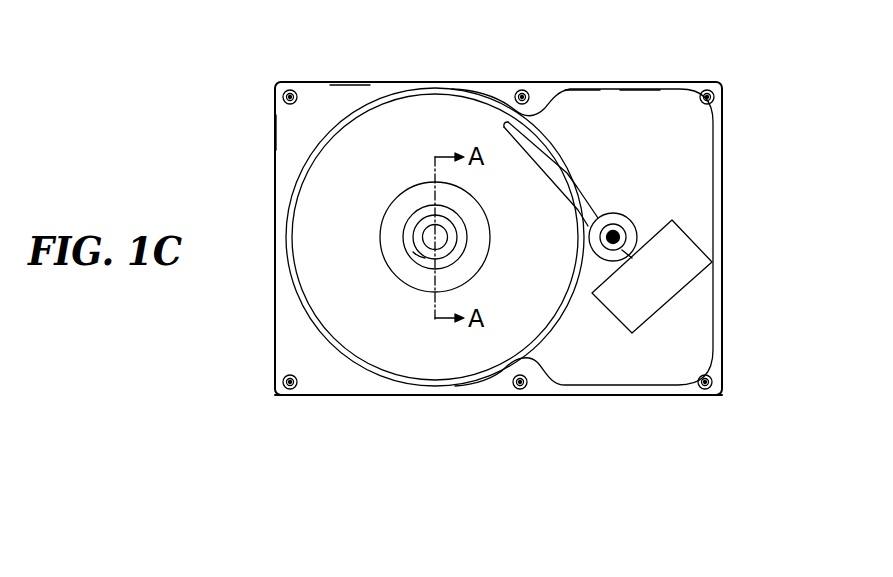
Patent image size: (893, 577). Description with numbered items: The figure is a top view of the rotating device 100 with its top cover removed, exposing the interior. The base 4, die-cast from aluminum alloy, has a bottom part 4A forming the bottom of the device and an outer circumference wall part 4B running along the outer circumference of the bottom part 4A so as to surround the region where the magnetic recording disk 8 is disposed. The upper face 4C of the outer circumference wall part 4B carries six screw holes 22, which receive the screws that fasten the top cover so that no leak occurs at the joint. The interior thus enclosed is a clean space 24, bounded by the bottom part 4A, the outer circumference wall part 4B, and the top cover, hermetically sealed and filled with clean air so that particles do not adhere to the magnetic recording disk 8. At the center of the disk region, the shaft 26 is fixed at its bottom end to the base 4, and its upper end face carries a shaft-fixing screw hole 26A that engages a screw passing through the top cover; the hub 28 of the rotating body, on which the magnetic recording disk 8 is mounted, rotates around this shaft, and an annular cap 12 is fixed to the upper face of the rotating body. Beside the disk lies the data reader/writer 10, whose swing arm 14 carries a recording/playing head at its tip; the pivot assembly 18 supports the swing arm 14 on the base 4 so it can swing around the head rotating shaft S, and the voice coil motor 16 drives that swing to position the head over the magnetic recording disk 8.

The rotating device 100 is at (475, 495).
The base 4 is at (723, 138).
The bottom part 4A is at (577, 107).
The outer circumference wall part 4B is at (345, 107).
The upper face 4C is at (283, 132).
The magnetic recording disk 8 is at (433, 117).
The data reader/writer 10 is at (667, 227).
The cap 12 is at (434, 248).
The swing arm 14 is at (592, 195).
The voice coil motor 16 is at (686, 276).
The pivot assembly 18 is at (630, 222).
The screw holes 22 is at (290, 90).
The clean space 24 is at (635, 107).
The shaft 26 is at (413, 240).
The shaft-fixing screw hole 26A is at (413, 253).
The hub 28 is at (398, 263).
The head rotating shaft S is at (627, 253).